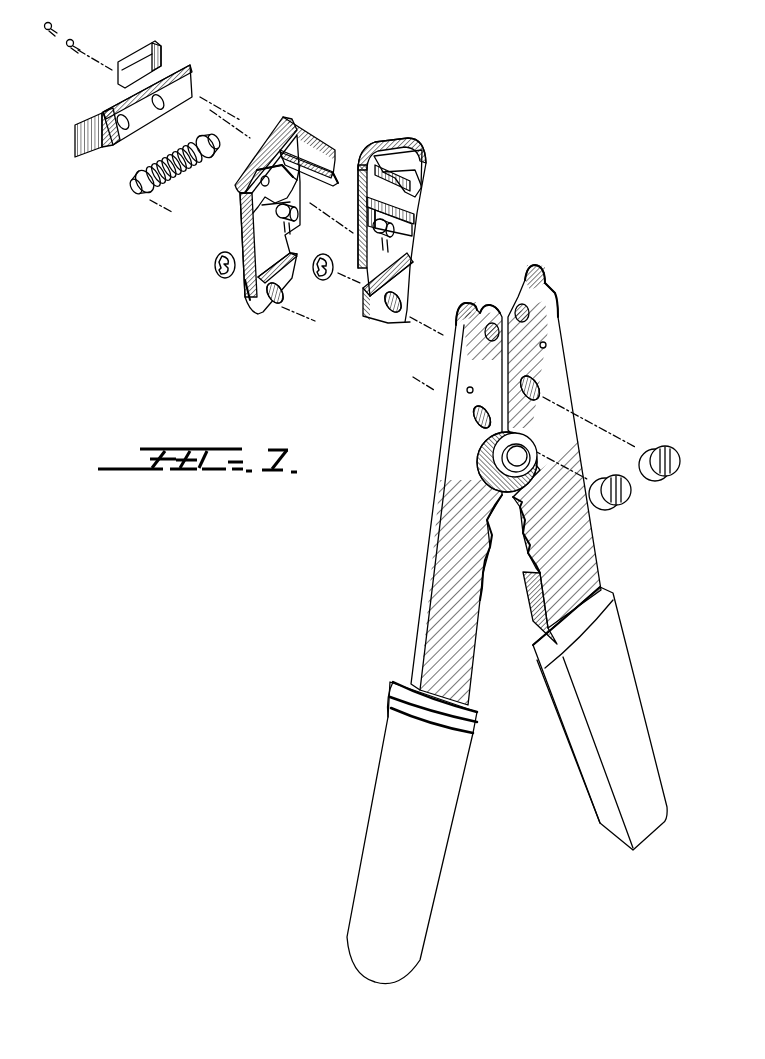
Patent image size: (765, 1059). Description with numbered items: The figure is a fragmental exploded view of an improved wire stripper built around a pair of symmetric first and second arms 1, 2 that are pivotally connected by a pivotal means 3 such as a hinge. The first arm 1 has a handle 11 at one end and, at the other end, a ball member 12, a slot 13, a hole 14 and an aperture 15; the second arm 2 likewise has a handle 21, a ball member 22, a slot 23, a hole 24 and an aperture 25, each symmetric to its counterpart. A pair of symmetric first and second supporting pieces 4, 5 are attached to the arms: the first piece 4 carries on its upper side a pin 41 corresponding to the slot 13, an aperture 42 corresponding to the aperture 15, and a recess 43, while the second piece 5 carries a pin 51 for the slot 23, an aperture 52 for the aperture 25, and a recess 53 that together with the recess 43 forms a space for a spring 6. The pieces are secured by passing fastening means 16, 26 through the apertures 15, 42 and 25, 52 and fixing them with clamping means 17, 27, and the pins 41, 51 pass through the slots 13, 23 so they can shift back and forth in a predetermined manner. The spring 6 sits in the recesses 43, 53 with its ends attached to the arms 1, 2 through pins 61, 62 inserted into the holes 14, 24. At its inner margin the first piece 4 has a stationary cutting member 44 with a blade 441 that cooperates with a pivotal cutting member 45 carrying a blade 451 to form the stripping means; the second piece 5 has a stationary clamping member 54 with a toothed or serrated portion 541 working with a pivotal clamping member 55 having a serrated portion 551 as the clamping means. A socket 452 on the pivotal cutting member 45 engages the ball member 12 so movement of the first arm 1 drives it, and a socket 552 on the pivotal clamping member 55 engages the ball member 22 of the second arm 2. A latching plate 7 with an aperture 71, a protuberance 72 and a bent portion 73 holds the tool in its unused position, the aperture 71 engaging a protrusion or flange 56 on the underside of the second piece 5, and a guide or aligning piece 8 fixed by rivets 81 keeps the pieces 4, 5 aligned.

The first arm 1 is at (592, 540).
The handle 11 is at (578, 748).
The ball member 12 is at (534, 264).
The slot 13 is at (562, 292).
The hole 14 is at (546, 345).
The aperture 15 is at (538, 384).
The fastening means 16 is at (656, 448).
The clamping means 17 is at (328, 280).
The second arm 2 is at (423, 573).
The handle 21 is at (382, 765).
The ball member 22 is at (468, 303).
The slot 23 is at (490, 306).
The hole 24 is at (468, 392).
The aperture 25 is at (478, 424).
The fastening means 26 is at (606, 478).
The clamping means 27 is at (215, 272).
The pivotal means 3 is at (505, 472).
The first supporting piece 4 is at (448, 232).
The pin 41 is at (394, 230).
The aperture 42 is at (393, 313).
The recess 43 is at (412, 258).
The stationary cutting member 44 is at (362, 160).
The blade 441 is at (414, 218).
The pivotal cutting member 45 is at (412, 148).
The blade 451 is at (413, 172).
The socket 452 is at (415, 200).
The second supporting piece 5 is at (283, 322).
The pin 51 is at (298, 213).
The aperture 52 is at (275, 303).
The recess 53 is at (292, 270).
The stationary clamping member 54 is at (338, 186).
The toothed or serrated portion 541 is at (338, 178).
The pivotal clamping member 55 is at (257, 172).
The toothed or serrated portion 551 is at (312, 178).
The socket 552 is at (262, 207).
The protrusion or flange 56 is at (247, 283).
The spring 6 is at (172, 173).
The pin 61 is at (190, 118).
The pin 62 is at (135, 200).
The latching plate 7 is at (192, 84).
The aperture 71 is at (120, 114).
The protuberance 72 is at (161, 108).
The bent portion 73 is at (90, 160).
The guide or aligning piece 8 is at (158, 52).
The rivets 81 is at (66, 48).